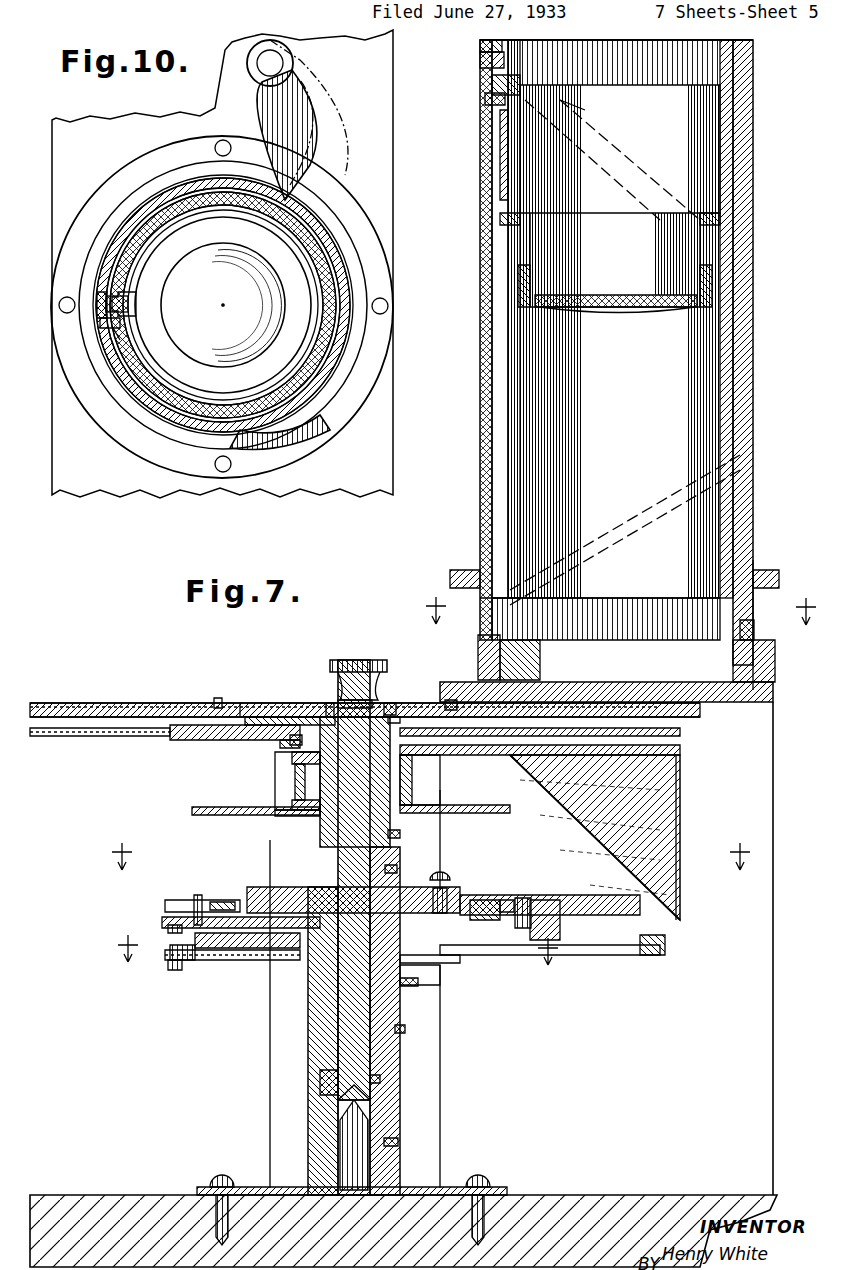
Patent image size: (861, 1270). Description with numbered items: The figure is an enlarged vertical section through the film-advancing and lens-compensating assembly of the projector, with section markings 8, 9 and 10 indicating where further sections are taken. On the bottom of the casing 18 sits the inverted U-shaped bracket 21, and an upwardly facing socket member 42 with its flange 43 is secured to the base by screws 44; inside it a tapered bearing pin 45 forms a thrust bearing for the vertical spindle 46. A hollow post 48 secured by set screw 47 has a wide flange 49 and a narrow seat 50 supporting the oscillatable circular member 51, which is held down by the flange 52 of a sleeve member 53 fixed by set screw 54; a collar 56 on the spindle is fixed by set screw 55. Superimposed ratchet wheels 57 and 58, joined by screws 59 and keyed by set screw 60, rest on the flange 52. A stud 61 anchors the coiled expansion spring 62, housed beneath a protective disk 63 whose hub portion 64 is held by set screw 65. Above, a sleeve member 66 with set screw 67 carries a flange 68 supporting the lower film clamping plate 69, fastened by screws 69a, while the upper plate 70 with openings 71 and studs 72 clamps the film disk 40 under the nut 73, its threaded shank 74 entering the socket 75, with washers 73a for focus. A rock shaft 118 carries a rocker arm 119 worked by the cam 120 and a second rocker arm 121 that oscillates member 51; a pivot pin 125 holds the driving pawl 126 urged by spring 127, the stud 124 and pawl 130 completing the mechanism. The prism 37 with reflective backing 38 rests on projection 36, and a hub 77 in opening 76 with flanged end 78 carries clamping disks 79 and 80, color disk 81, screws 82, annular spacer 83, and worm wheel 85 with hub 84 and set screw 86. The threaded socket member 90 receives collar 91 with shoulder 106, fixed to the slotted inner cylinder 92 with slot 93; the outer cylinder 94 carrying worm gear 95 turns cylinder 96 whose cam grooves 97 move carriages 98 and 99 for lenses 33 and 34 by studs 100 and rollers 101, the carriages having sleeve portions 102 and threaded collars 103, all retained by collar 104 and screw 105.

In FIG. 7, the section line 8- 8 is at (427, 856).
In FIG. 7, the section line 9- 9 is at (333, 950).
In FIG. 7, the section line 10- 10 is at (617, 610).
In FIG. 7, the bottom of the casing 18 is at (128, 1200).
In FIG. 10, the inverted U-shaped bracket 21 is at (372, 405).
In FIG. 7, the inverted U-shaped bracket 21 is at (730, 704).
In FIG. 7, the compensating lens 33 is at (620, 308).
In FIG. 10, the compensating lens 34 is at (223, 305).
In FIG. 7, the compensating lens 34 is at (604, 682).
In FIG. 7, the projection 36 is at (438, 758).
In FIG. 7, the prism 37 is at (668, 800).
In FIG. 7, the reflective backing 38 is at (578, 835).
In FIG. 7, the film disk 40 is at (240, 703).
In FIG. 7, the socket member 42 is at (385, 1118).
In FIG. 7, the flange 43 is at (450, 1188).
In FIG. 7, the screw 44 is at (220, 1176).
In FIG. 7, the tapered bearing pin 45 is at (342, 1145).
In FIG. 7, the spindle 46 is at (345, 825).
In FIG. 7, the set screw 47 is at (400, 1142).
In FIG. 7, the hollow post 48 is at (400, 1062).
In FIG. 7, the flange 49 is at (242, 948).
In FIG. 7, the seat 50 is at (312, 937).
In FIG. 7, the oscillatable circular member 51 is at (240, 915).
In FIG. 7, the flange 52 is at (443, 852).
In FIG. 7, the sleeve member 53 is at (325, 1013).
In FIG. 7, the set screw 54 is at (404, 1030).
In FIG. 7, the set screw 55 is at (382, 1080).
In FIG. 7, the collar 56 is at (320, 1078).
In FIG. 7, the ratchet wheel 57 is at (270, 892).
In FIG. 7, the ratchet wheel 58 is at (482, 900).
In FIG. 7, the screws 59 is at (448, 888).
In FIG. 7, the set screw 60 is at (392, 880).
In FIG. 7, the stud 61 is at (172, 968).
In FIG. 7, the coiled expansion spring 62 is at (210, 955).
In FIG. 7, the protective disk 63 is at (478, 966).
In FIG. 7, the hub portion 64 is at (410, 992).
In FIG. 7, the set screw 65 is at (420, 982).
In FIG. 7, the sleeve member 66 is at (328, 712).
In FIG. 7, the set screw 67 is at (400, 834).
In FIG. 7, the flange 68 is at (258, 715).
In FIG. 7, the film clamping plate 69 is at (172, 715).
In FIG. 7, the screws 69a is at (530, 680).
In FIG. 7, the film clamping plate 70 is at (190, 717).
In FIG. 7, the openings 71 is at (136, 708).
In FIG. 7, the studs 72 is at (218, 698).
In FIG. 7, the nut 73 is at (355, 660).
In FIG. 7, the washers 73a is at (338, 702).
In FIG. 7, the threaded shank 74 is at (396, 715).
In FIG. 7, the socket 75 is at (392, 702).
In FIG. 7, the opening 76 is at (292, 765).
In FIG. 7, the hub 77 is at (308, 780).
In FIG. 7, the flanged upper end 78 is at (278, 745).
In FIG. 7, the clamping disk 79 is at (178, 742).
In FIG. 7, the clamping disk 80 is at (214, 742).
In FIG. 7, the translucent color disk 81 is at (92, 735).
In FIG. 7, the screws 82 is at (294, 735).
In FIG. 7, the annular spacer 83 is at (428, 777).
In FIG. 7, the hub 84 is at (290, 820).
In FIG. 7, the worm wheel 85 is at (215, 816).
In FIG. 7, the set screw 86 is at (432, 800).
In FIG. 10, the threaded socket member 90 is at (118, 205).
In FIG. 7, the threaded socket member 90 is at (775, 672).
In FIG. 7, the collar 91 is at (487, 655).
In FIG. 10, the cylindrical member 92 is at (195, 190).
In FIG. 7, the cylindrical member 92 is at (727, 393).
In FIG. 10, the vertical slot 93 is at (120, 330).
In FIG. 7, the vertical slot 93 is at (490, 416).
In FIG. 10, the outer cylinder member 94 is at (145, 198).
In FIG. 7, the outer cylinder member 94 is at (750, 410).
In FIG. 7, the annular worm gear 95 is at (780, 580).
In FIG. 10, the cylinder 96 is at (168, 190).
In FIG. 7, the cylinder 96 is at (745, 352).
In FIG. 10, the cam grooves 97 is at (95, 288).
In FIG. 7, the cam grooves 97 is at (612, 188).
In FIG. 7, the carriage 98 is at (500, 158).
In FIG. 10, the carriage 99 is at (147, 371).
In FIG. 7, the carriage 99 is at (604, 605).
In FIG. 10, the studs 100 is at (115, 305).
In FIG. 7, the studs 100 is at (514, 88).
In FIG. 7, the rollers 101 is at (488, 103).
In FIG. 10, the sleeve portions 102 is at (100, 318).
In FIG. 7, the sleeve portions 102 is at (510, 220).
In FIG. 10, the threaded collars 103 is at (223, 305).
In FIG. 7, the threaded collars 103 is at (690, 307).
In FIG. 7, the collar 104 is at (482, 44).
In FIG. 7, the screw 105 is at (484, 62).
In FIG. 7, the shoulder 106 is at (762, 628).
In FIG. 10, the rock shaft 118 is at (275, 63).
In FIG. 7, the rock shaft 118 is at (652, 955).
In FIG. 10, the rocker arm 119 is at (290, 120).
In FIG. 10, the cam 120 is at (322, 435).
In FIG. 7, the rocker arm 121 is at (602, 950).
In FIG. 7, the stud 124 is at (196, 898).
In FIG. 7, the pivot pin 125 is at (538, 910).
In FIG. 7, the driving pawl 126 is at (506, 905).
In FIG. 7, the coiled spring 127 is at (556, 920).
In FIG. 7, the pawl 130 is at (165, 907).